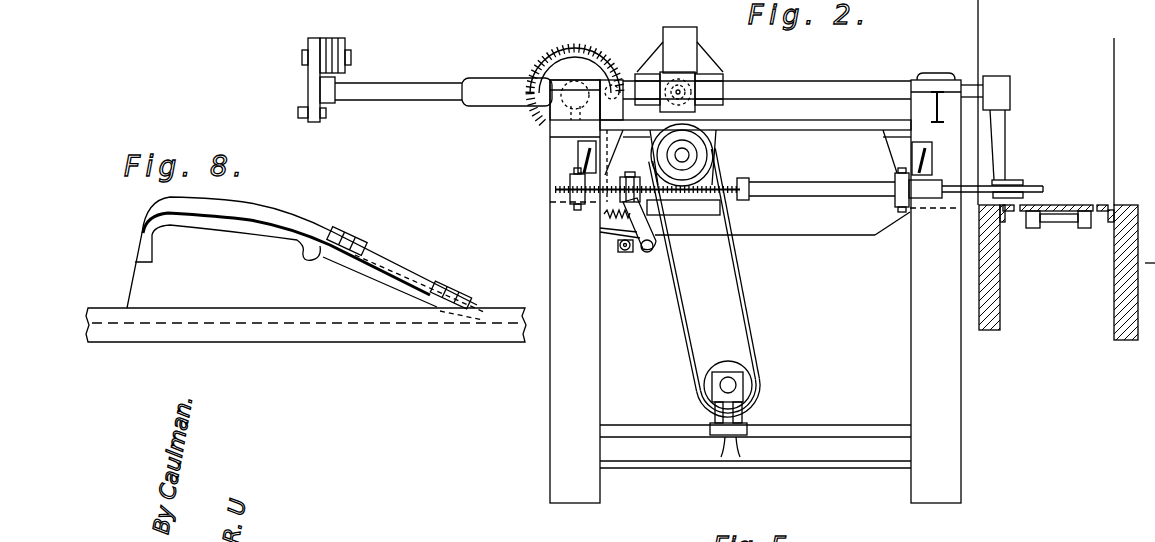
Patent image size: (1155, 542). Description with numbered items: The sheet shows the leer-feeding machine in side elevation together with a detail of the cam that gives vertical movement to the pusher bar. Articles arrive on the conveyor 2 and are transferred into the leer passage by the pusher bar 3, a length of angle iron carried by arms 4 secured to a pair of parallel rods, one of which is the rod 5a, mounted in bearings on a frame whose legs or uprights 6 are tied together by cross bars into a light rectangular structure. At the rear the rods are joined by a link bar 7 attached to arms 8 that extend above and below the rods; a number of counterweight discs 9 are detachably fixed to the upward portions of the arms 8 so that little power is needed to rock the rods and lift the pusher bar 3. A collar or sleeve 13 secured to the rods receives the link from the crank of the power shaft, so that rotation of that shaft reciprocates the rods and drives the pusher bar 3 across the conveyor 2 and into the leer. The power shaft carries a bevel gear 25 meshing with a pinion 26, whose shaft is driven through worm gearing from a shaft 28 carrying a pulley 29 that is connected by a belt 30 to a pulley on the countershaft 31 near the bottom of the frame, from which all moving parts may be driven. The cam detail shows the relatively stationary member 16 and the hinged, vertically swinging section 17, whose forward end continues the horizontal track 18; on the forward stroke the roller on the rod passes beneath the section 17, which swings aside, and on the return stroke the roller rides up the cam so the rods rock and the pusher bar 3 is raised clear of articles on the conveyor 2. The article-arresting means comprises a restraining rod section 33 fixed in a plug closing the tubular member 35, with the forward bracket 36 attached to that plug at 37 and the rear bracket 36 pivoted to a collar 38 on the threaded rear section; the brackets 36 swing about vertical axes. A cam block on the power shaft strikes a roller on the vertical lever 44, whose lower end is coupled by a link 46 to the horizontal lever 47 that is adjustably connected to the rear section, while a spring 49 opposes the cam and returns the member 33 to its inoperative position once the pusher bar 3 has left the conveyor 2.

In FIG. 2, the conveyor 2 is at (1069, 205).
In FIG. 2, the pusher bar 3 is at (1016, 180).
In FIG. 2, the arms 4 is at (1006, 128).
In FIG. 2, the rod 5a is at (410, 92).
In FIG. 2, the legs or uprights 6 is at (600, 388).
In FIG. 2, the link bar 7 is at (304, 118).
In FIG. 2, the arms 8 is at (308, 75).
In FIG. 2, the counterweight discs 9 is at (330, 38).
In FIG. 2, the collar or sleeve 13 is at (700, 78).
In FIG. 8, the stationary cam member 16 is at (259, 213).
In FIG. 8, the swinging cam section 17 is at (387, 279).
In FIG. 8, the track 18 is at (238, 310).
In FIG. 2, the bevel gear 25 is at (563, 55).
In FIG. 2, the pinion 26 is at (612, 82).
In FIG. 2, the shaft 28 is at (684, 155).
In FIG. 2, the pulley 29 is at (713, 162).
In FIG. 2, the belt 30 is at (754, 284).
In FIG. 2, the countershaft 31 is at (735, 382).
In FIG. 2, the restraining rod section 33 is at (1040, 185).
In FIG. 2, the tubular member 35 is at (836, 182).
In FIG. 2, the bracket arms 36 is at (580, 157).
In FIG. 2, the connection 37 is at (933, 198).
In FIG. 2, the collar 38 is at (572, 190).
In FIG. 2, the vertical lever 44 is at (624, 157).
In FIG. 2, the link 46 is at (633, 252).
In FIG. 2, the horizontal lever 47 is at (655, 217).
In FIG. 2, the spring 49 is at (612, 228).